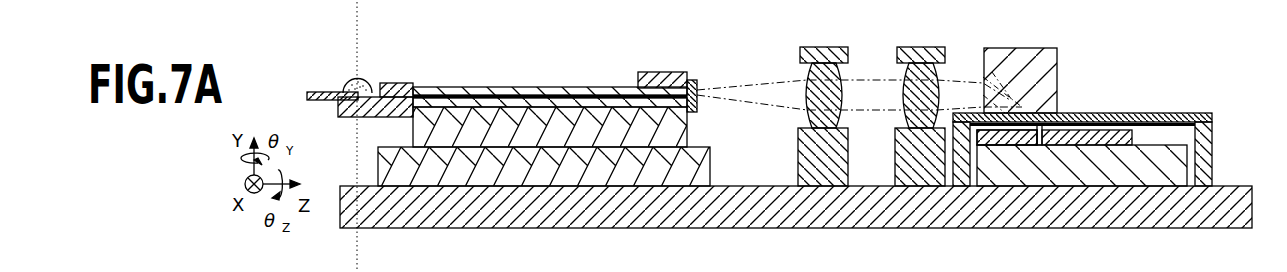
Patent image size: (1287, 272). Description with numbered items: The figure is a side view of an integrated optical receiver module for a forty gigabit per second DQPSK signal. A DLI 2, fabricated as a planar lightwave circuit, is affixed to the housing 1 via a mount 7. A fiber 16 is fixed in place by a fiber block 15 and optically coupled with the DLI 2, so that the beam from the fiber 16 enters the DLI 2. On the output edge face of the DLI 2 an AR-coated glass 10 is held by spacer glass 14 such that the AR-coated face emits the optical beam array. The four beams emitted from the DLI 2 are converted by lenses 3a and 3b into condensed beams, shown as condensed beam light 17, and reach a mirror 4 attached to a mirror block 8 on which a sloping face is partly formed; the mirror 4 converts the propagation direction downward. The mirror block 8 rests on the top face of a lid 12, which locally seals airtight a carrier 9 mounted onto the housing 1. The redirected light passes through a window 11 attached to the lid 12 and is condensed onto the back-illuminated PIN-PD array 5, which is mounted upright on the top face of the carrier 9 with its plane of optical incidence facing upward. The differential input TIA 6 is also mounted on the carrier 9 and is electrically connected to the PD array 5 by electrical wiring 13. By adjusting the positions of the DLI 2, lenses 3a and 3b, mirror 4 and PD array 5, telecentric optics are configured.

The housing 1 is at (538, 218).
The DLI 2 is at (432, 88).
The lens 3a is at (807, 78).
The lens 3b is at (904, 78).
The mirror 4 is at (983, 77).
The back-illuminated PIN-PD array 5 is at (1016, 143).
The differential input TIA 6 is at (1078, 143).
The mount 7 is at (498, 172).
The mirror block 8 is at (1058, 60).
The carrier 9 is at (1140, 177).
The AR-coated glass 10 is at (692, 80).
The window 11 is at (1017, 130).
The lid 12 is at (1172, 113).
The electrical wiring 13 is at (1035, 125).
The spacer glass 14 is at (638, 76).
The fiber block 15 is at (393, 84).
The fiber 16 is at (326, 92).
The condensed beam light 17 is at (1012, 126).